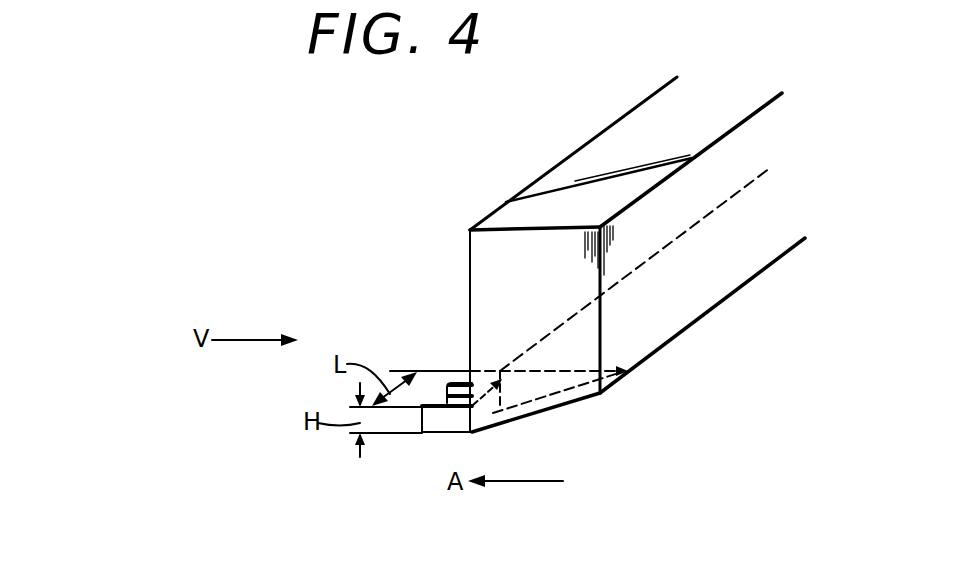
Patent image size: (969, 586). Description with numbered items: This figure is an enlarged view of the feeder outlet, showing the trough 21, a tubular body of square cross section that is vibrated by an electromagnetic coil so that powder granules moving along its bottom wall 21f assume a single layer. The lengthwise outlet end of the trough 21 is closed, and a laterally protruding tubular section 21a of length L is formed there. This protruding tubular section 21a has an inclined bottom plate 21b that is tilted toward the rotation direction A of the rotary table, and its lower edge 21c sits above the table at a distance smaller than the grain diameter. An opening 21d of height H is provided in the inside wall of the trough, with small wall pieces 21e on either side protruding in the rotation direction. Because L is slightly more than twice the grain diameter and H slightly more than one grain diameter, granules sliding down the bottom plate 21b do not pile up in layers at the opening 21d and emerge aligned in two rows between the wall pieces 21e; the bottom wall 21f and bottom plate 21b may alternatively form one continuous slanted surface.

The trough 21 is at (504, 184).
The protruding tubular section 21a is at (557, 375).
The inclined bottom plate 21b is at (583, 396).
The lower edge 21c is at (525, 417).
The opening 21d is at (464, 374).
The small wall pieces 21e is at (445, 425).
The bottom wall 21f is at (722, 265).